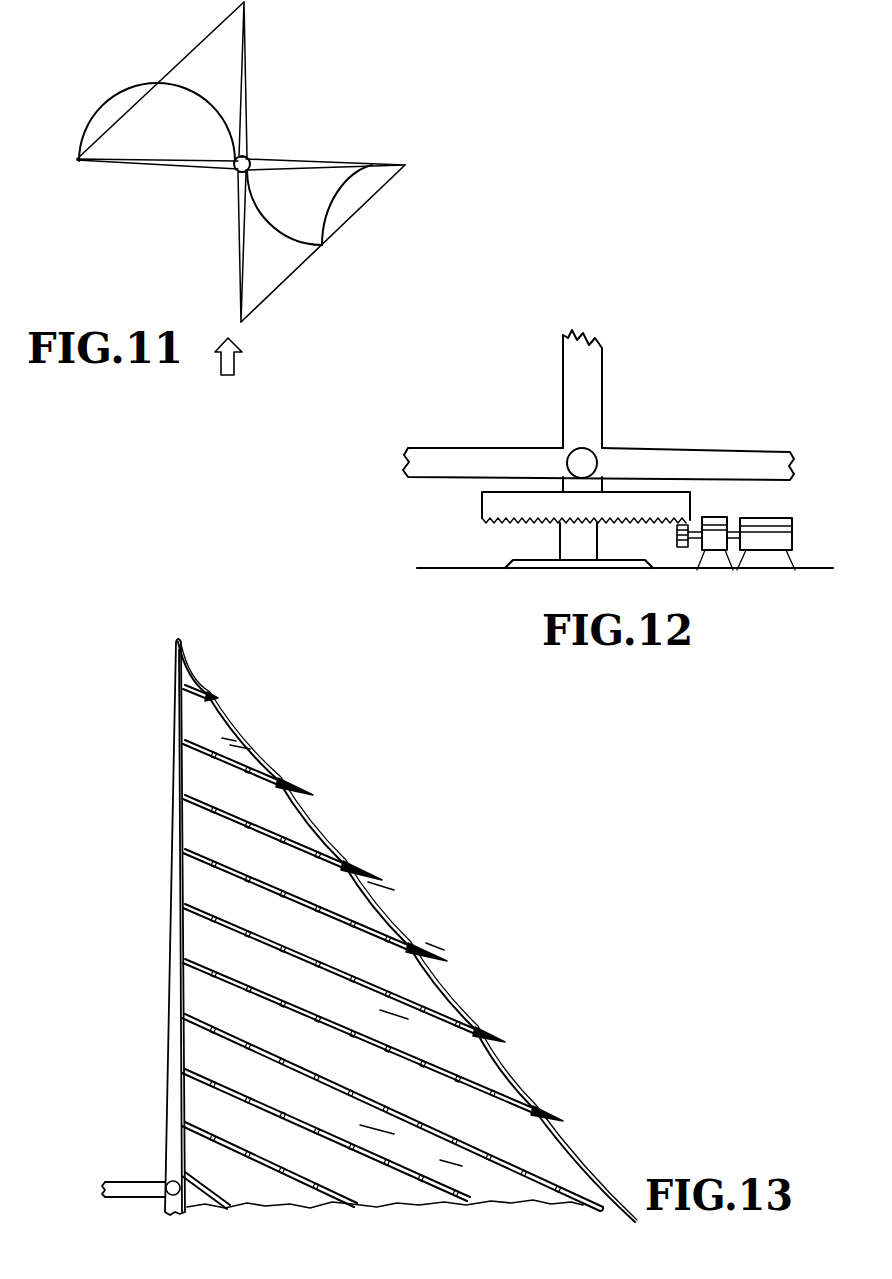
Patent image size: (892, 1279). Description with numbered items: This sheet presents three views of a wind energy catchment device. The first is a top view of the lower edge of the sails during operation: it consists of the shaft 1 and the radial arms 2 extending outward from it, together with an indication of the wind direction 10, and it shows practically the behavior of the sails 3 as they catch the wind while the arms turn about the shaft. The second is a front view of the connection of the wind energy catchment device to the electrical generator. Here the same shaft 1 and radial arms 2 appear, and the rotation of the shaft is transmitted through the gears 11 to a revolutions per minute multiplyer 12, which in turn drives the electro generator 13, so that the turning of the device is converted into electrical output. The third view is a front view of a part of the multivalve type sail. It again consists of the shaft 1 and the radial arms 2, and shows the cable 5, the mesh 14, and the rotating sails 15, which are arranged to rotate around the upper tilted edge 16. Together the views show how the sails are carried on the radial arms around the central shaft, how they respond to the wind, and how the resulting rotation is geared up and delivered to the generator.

In FIG. 11, the shaft 1 is at (251, 171).
In FIG. 12, the shaft 1 is at (590, 385).
In FIG. 13, the shaft 1 is at (170, 1046).
In FIG. 11, the radial arms 2 is at (232, 195).
In FIG. 12, the radial arms 2 is at (627, 457).
In FIG. 13, the radial arms 2 is at (128, 1182).
In FIG. 11, the sails 3 is at (233, 126).
In FIG. 13, the cable 5 is at (587, 1147).
In FIG. 11, the wind direction 10 is at (237, 360).
In FIG. 12, the gears 11 is at (673, 533).
In FIG. 12, the revolutions per minute multiplyer 12 is at (713, 517).
In FIG. 12, the electro generator 13 is at (773, 518).
In FIG. 13, the mesh 14 is at (310, 1150).
In FIG. 13, the rotating sails 15 is at (222, 727).
In FIG. 13, the upper tilted edge 16 is at (229, 790).